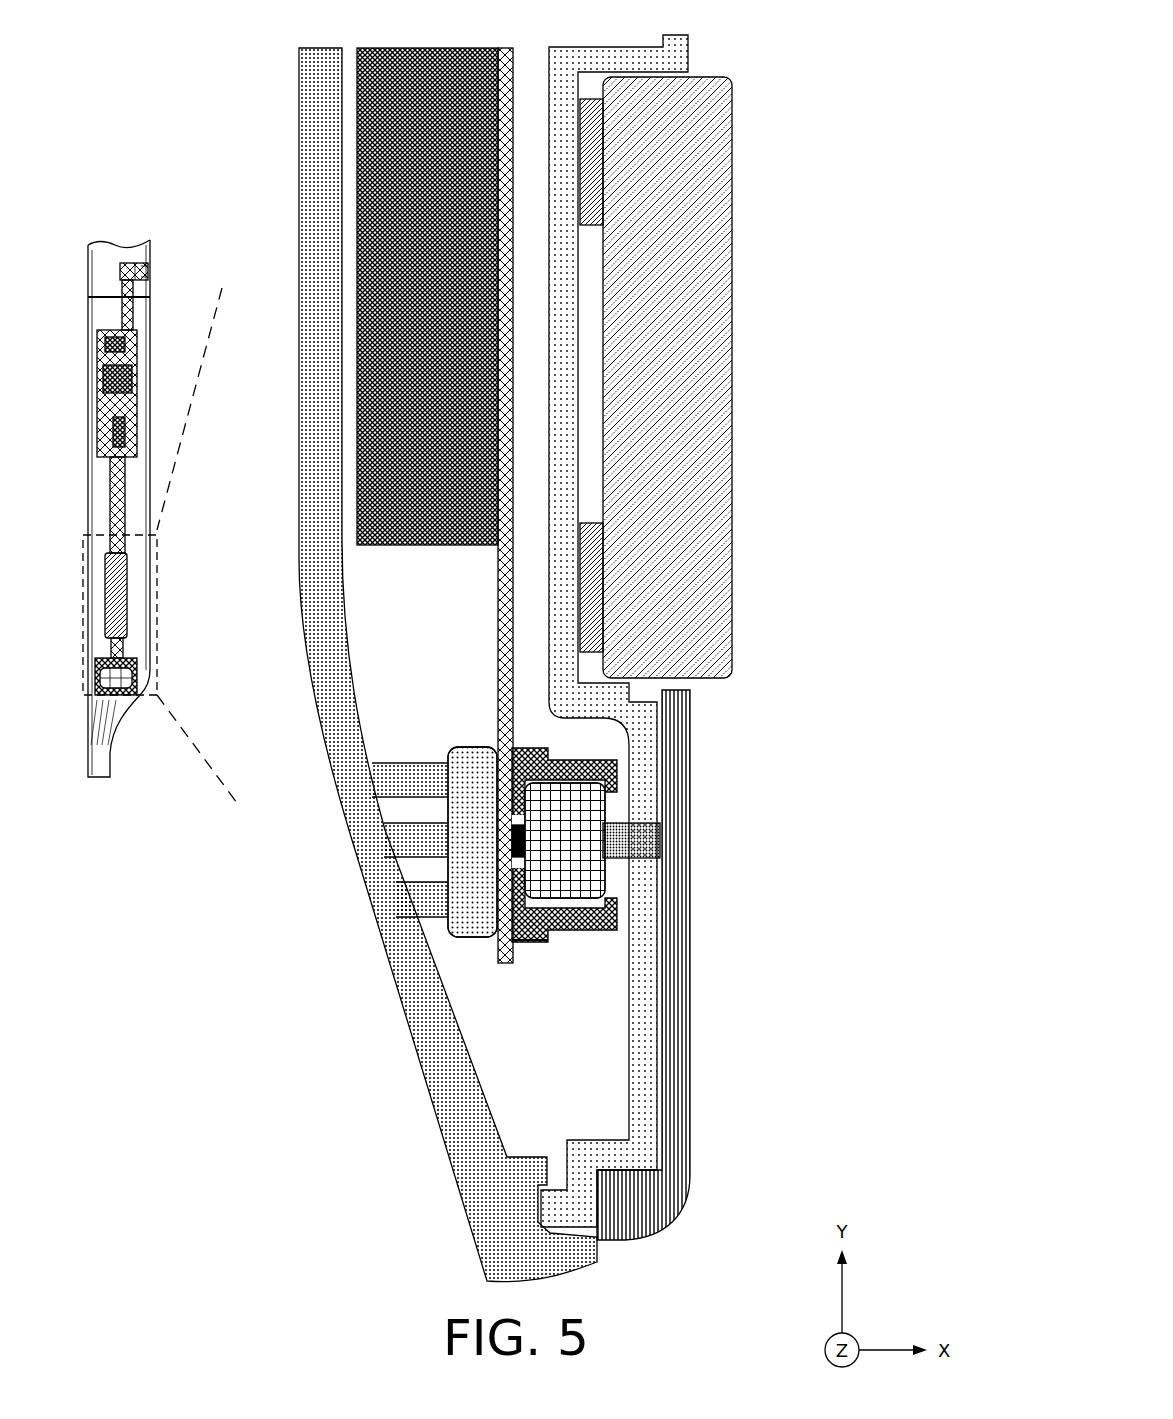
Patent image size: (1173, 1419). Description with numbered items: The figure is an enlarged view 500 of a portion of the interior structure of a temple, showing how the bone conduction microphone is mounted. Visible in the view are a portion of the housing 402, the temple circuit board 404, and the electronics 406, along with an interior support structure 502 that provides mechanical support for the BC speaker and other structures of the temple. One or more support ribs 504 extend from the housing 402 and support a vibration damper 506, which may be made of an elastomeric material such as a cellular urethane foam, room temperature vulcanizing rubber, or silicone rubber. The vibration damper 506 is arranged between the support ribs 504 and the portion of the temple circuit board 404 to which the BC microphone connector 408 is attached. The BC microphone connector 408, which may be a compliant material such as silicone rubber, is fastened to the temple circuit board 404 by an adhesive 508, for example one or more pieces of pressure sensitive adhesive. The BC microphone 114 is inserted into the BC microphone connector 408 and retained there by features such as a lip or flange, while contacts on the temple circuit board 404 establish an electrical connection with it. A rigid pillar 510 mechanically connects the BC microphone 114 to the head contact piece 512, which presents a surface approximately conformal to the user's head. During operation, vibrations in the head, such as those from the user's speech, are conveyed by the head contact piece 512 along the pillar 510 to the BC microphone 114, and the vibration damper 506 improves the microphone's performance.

The enlarged view 500 is at (802, 39).
The housing 402 is at (300, 122).
The electronics 406 is at (380, 227).
The temple circuit board 404 is at (512, 487).
The interior support structure 502 is at (688, 62).
The support ribs 504 is at (422, 905).
The vibration damper 506 is at (473, 938).
The BC microphone connector 408 is at (617, 770).
The adhesive 508 is at (540, 942).
The BC microphone 114 is at (585, 875).
The pillar 510 is at (648, 842).
The head contact piece 512 is at (673, 1192).